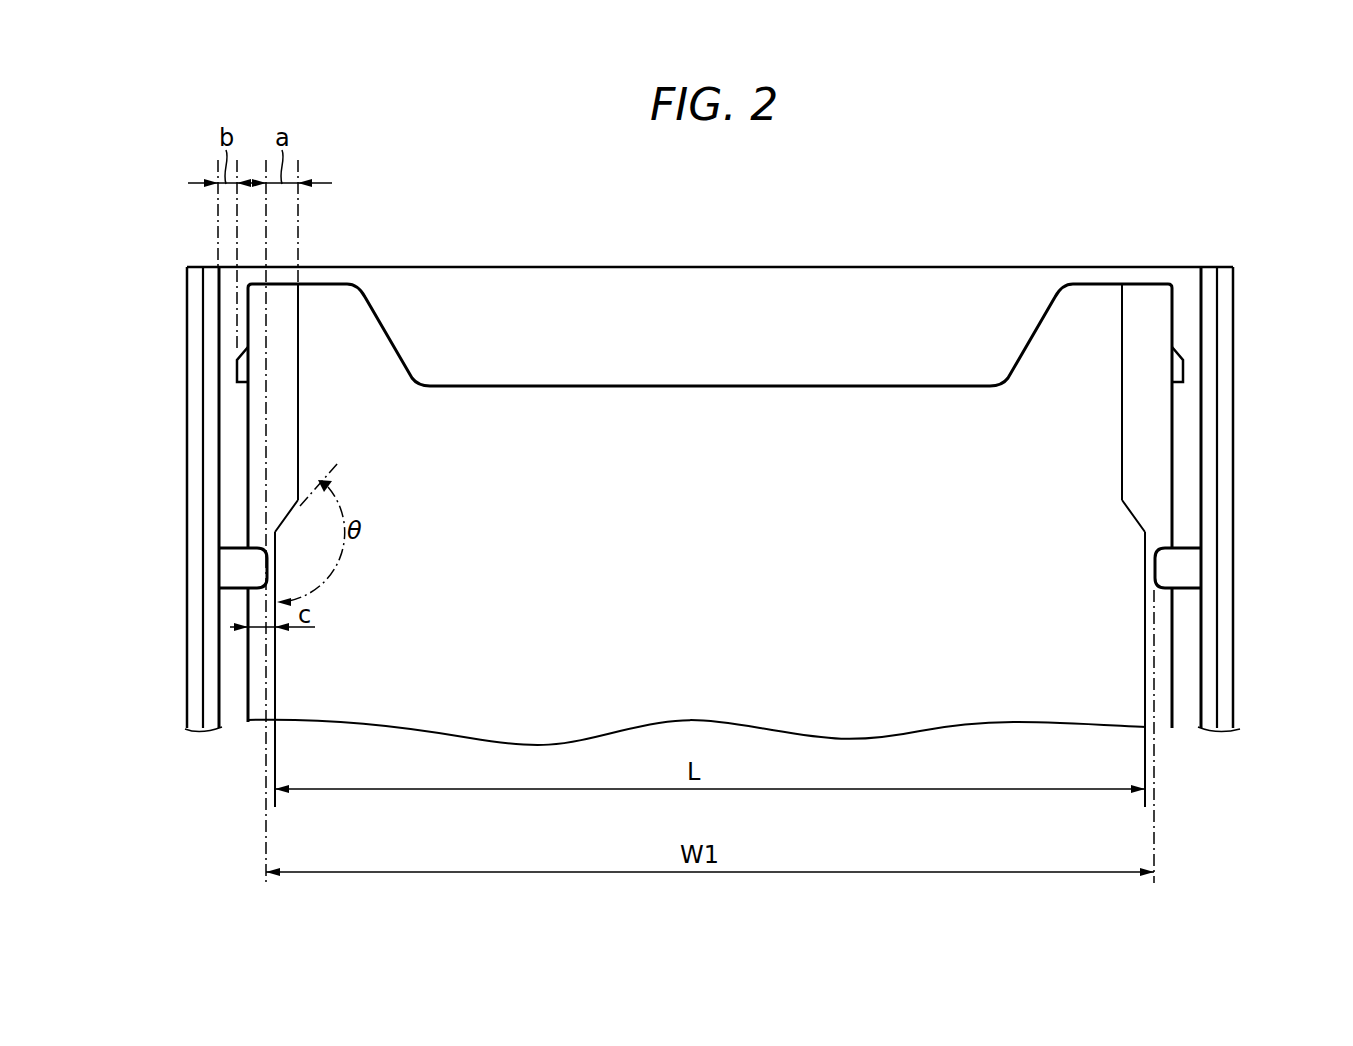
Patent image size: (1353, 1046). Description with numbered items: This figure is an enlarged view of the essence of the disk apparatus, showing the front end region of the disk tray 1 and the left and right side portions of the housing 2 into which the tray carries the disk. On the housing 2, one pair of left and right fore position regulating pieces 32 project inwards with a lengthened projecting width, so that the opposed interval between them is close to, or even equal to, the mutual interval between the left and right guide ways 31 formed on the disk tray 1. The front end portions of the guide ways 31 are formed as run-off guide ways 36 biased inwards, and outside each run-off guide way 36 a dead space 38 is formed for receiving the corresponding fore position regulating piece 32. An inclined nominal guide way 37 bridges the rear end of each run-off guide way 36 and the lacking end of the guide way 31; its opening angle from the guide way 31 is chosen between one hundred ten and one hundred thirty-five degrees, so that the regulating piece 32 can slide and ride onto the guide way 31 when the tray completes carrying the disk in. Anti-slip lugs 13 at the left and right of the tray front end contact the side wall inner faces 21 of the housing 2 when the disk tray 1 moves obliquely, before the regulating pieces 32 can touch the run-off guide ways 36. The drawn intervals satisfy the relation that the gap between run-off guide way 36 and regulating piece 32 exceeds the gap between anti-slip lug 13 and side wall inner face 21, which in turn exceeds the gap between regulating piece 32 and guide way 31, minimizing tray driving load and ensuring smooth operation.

The disk tray 1 is at (565, 368).
The housing 2 is at (178, 511).
The anti-slip lug 13 is at (242, 372).
The side wall inner face 21 is at (216, 446).
The guide way 31 is at (280, 656).
The fore position regulating piece 32 is at (246, 570).
The run-off guide way 36 is at (292, 430).
The nominal guide way 37 is at (289, 526).
The dead space 38 is at (290, 408).